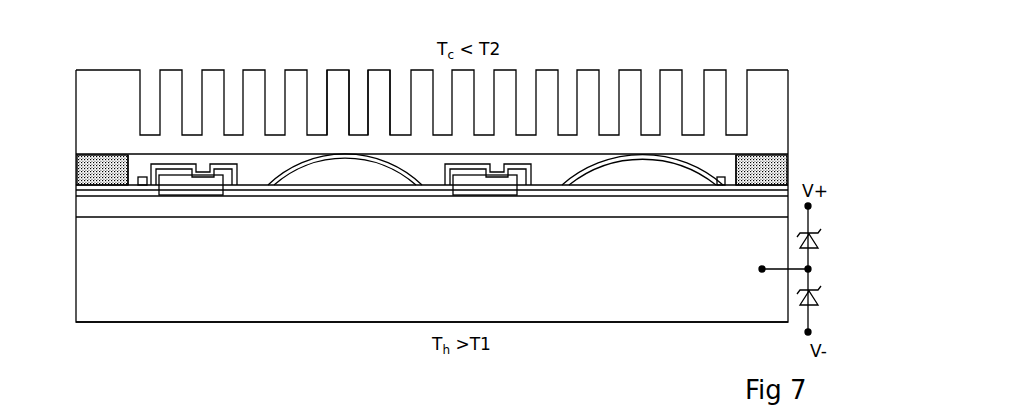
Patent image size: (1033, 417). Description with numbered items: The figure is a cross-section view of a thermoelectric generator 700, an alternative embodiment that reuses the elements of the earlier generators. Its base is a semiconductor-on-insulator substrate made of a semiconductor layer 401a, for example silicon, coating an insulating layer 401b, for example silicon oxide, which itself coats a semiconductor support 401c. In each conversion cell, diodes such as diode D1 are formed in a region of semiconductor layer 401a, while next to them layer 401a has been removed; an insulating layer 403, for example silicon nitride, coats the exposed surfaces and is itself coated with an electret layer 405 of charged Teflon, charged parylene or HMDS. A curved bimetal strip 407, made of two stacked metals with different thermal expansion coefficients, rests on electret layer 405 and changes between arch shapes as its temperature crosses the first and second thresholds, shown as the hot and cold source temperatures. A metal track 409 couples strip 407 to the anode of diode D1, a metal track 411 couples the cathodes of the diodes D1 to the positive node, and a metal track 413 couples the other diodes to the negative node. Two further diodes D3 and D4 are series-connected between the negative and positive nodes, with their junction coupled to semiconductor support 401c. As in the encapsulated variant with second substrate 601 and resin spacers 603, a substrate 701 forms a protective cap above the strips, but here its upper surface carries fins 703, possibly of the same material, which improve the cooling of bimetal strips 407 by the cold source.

The thermoelectric generator 700 is at (662, 52).
The substrate 701 is at (95, 107).
The fins 703 is at (330, 68).
The second substrate 601 is at (432, 83).
The spacers 603 is at (103, 172).
The metal track 413 is at (139, 178).
The metal track 411 is at (722, 178).
The metal track 409 is at (235, 165).
The curved bimetal strip 407 is at (397, 166).
The electret layer 405 is at (342, 192).
The insulating layer 403 is at (314, 191).
The semiconductor layer 401a is at (168, 188).
The insulating layer 401b is at (127, 211).
The semiconductor support 401c is at (117, 250).
The diode D1 is at (198, 174).
The diode D3 is at (820, 236).
The diode D4 is at (820, 292).